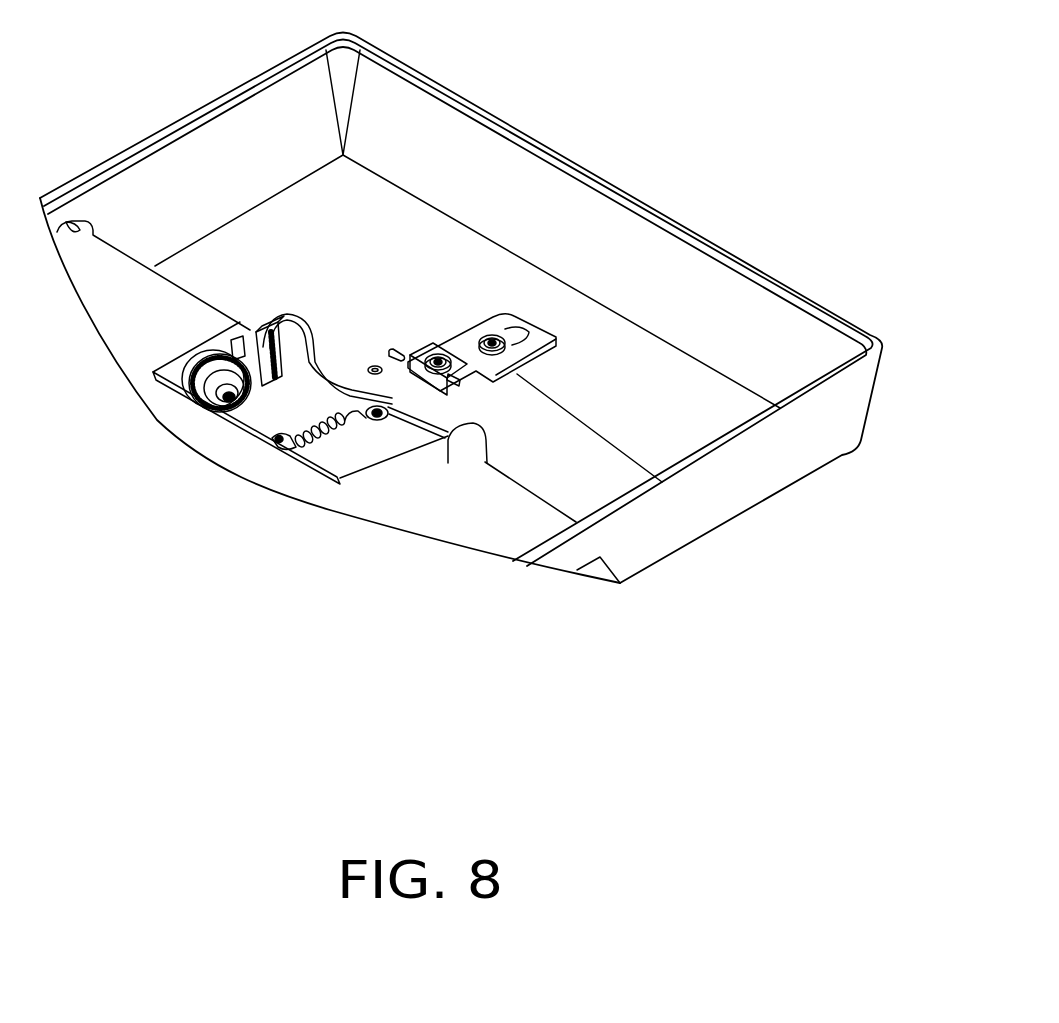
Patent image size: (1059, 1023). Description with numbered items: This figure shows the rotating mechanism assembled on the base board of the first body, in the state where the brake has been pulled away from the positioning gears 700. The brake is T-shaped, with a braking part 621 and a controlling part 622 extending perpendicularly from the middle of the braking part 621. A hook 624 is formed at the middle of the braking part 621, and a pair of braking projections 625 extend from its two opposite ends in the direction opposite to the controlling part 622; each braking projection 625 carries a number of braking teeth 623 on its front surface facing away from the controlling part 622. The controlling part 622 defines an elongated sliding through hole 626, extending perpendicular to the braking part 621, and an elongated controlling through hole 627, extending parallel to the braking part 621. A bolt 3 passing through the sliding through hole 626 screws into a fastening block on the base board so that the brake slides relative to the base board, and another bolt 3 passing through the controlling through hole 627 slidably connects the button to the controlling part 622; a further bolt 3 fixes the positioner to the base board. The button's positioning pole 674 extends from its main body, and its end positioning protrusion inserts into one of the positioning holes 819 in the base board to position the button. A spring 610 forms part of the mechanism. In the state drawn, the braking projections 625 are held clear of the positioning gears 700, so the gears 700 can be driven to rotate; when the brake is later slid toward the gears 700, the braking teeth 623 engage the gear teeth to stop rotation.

The controlling part 622 is at (633, 383).
The braking teeth 623 is at (293, 383).
The positioning gears 700 is at (210, 357).
The bolt 3 is at (240, 402).
The braking projections 625 is at (268, 330).
The braking part 621 is at (282, 433).
The spring 610 is at (318, 442).
The hook 624 is at (372, 420).
The controlling through hole 627 is at (446, 372).
The sliding through hole 626 is at (520, 333).
The positioning holes 819 is at (375, 365).
The positioning pole 674 is at (400, 352).